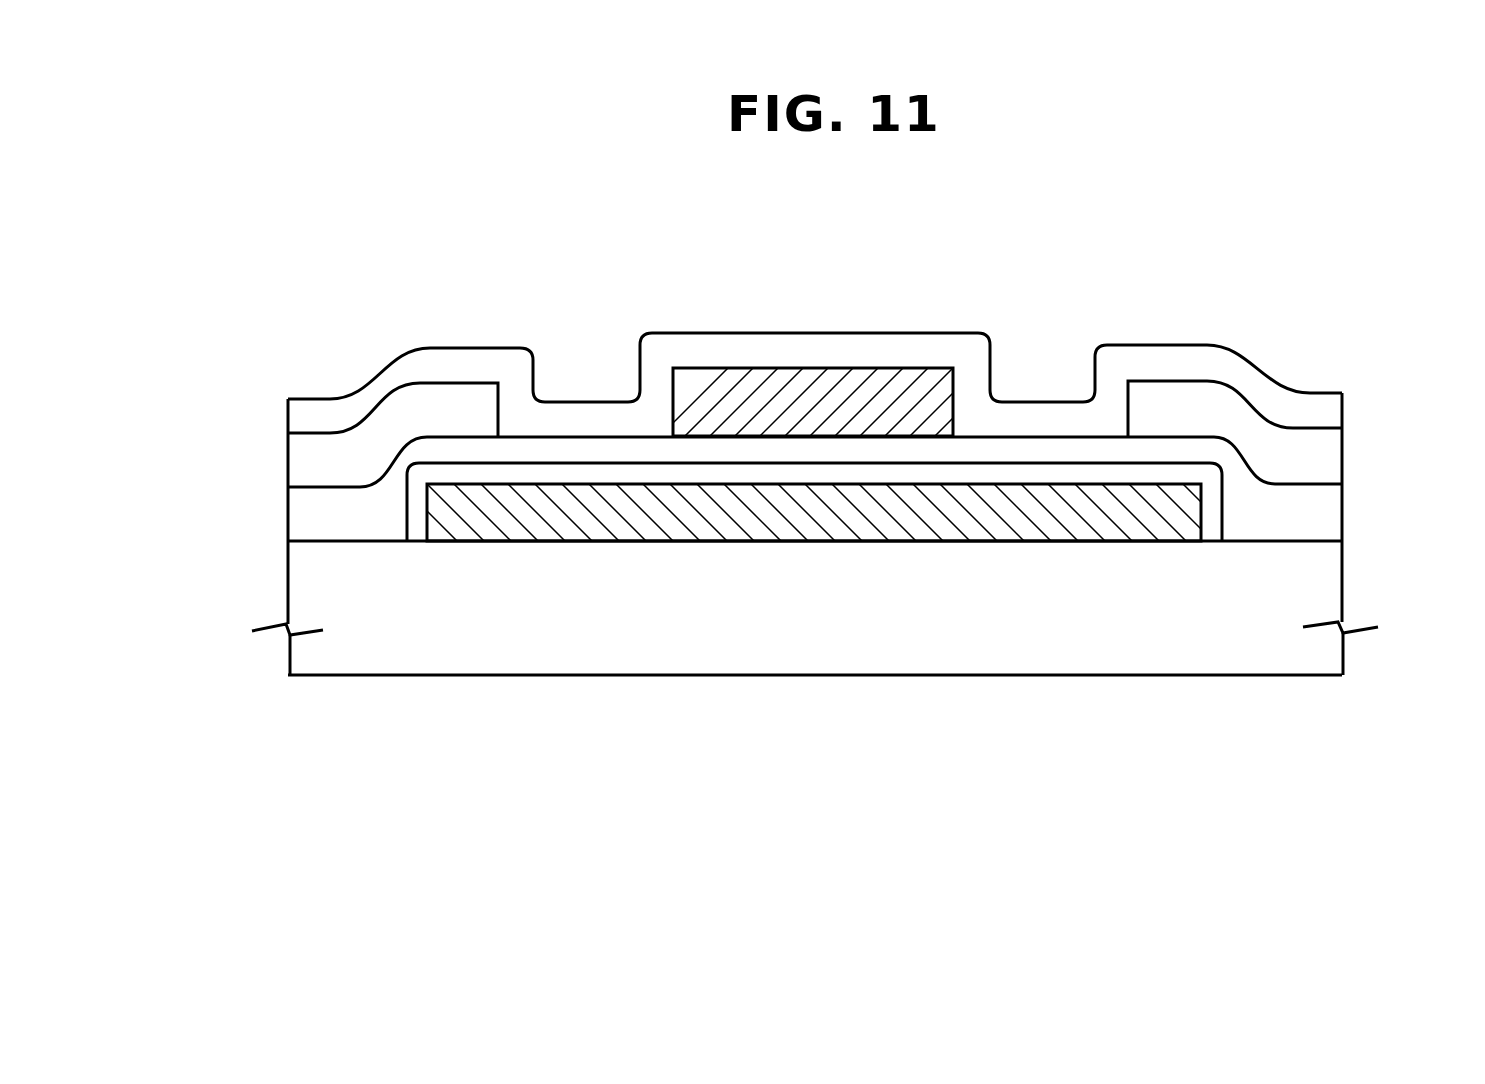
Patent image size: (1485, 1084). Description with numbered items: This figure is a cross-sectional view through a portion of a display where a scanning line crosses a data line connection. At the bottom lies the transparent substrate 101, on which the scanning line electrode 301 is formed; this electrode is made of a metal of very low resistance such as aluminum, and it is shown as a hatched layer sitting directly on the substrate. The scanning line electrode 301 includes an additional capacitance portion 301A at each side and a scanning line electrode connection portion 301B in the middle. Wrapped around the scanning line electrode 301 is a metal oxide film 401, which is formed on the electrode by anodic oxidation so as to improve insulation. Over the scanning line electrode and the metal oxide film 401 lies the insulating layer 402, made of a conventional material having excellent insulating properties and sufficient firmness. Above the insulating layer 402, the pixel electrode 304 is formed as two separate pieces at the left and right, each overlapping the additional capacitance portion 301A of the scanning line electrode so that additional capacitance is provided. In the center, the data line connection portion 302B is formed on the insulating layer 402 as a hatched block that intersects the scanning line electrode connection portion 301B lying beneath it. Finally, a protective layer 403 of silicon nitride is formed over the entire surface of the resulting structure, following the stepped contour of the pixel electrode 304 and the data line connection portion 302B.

The transparent substrate 101 is at (1320, 570).
The scanning line electrode 301 is at (617, 541).
The additional capacitance portion 301A is at (497, 520).
The scanning line electrode connection portion 301B is at (812, 525).
The data line connection portion 302B is at (816, 388).
The pixel electrode 304 is at (307, 459).
The metal oxide film 401 is at (1208, 523).
The insulating layer 402 is at (1320, 495).
The protective layer 403 is at (1320, 413).